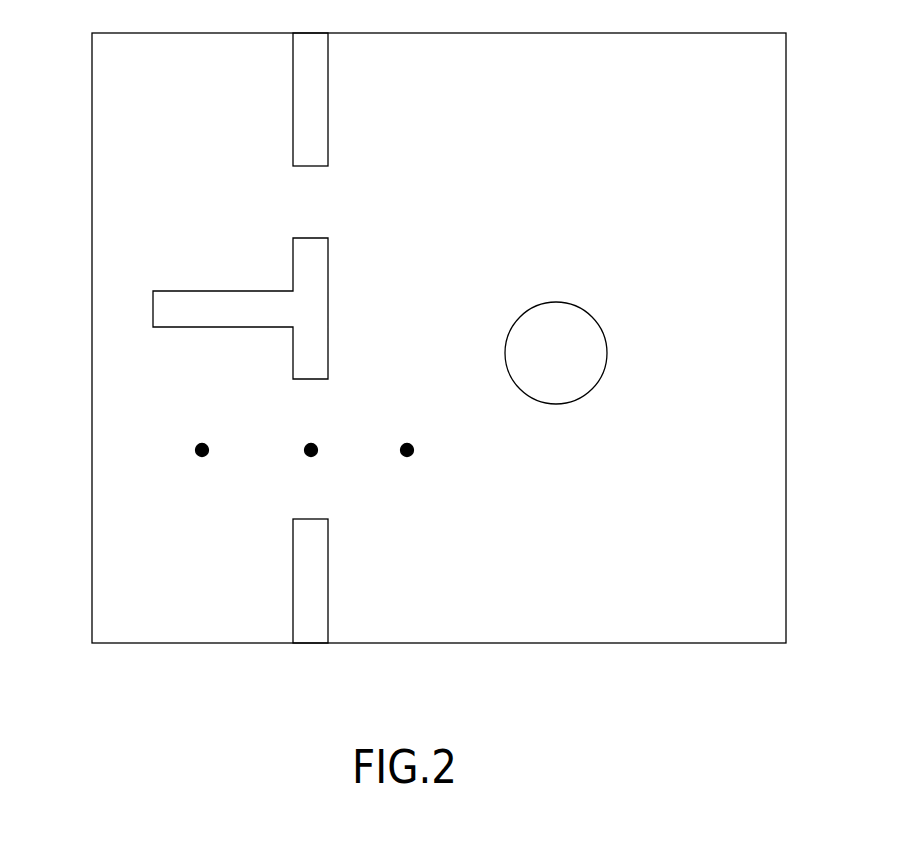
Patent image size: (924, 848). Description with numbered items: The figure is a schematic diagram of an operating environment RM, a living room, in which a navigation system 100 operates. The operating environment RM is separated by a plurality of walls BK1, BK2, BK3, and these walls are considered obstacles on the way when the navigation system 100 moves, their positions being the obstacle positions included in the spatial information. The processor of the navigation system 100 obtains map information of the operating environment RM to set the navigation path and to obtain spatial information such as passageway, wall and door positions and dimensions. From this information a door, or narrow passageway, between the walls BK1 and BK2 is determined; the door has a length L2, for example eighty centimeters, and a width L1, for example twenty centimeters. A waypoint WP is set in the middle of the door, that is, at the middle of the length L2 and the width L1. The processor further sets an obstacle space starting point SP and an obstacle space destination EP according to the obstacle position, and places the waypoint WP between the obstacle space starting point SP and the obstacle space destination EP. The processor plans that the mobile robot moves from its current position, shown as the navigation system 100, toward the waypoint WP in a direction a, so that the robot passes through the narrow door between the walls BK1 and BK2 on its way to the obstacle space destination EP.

The operating environment RM is at (786, 219).
The wall BK3 is at (318, 97).
The wall BK1 is at (318, 268).
The wall BK2 is at (318, 586).
The navigation system 100 is at (595, 348).
The obstacle space destination EP is at (200, 443).
The waypoint WP is at (314, 441).
The obstacle space starting point SP is at (411, 442).
The direction a is at (520, 405).
The width L1 is at (357, 533).
The length L2 is at (293, 379).